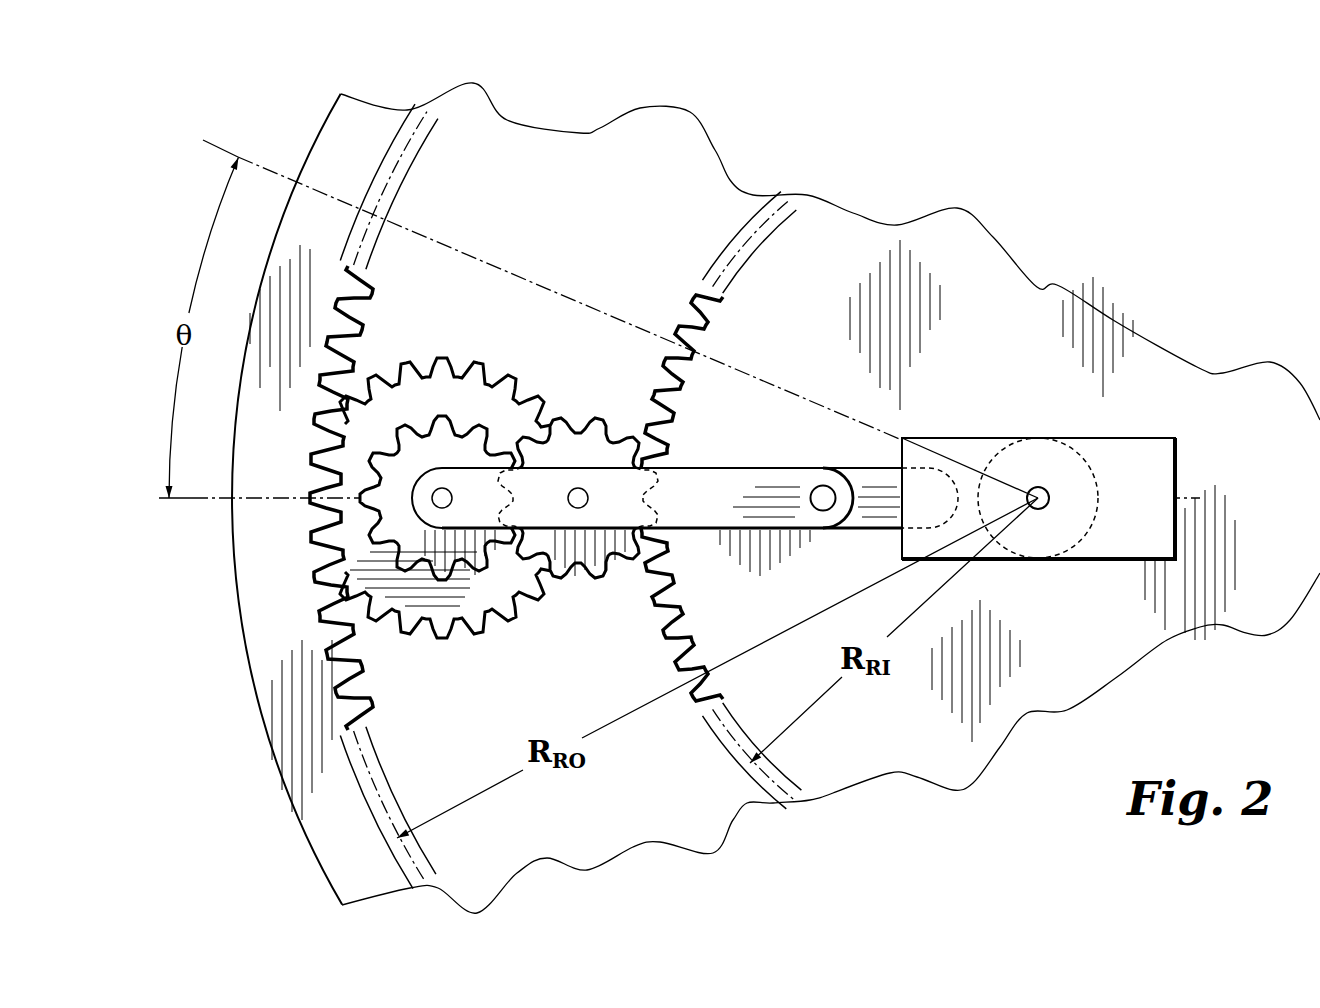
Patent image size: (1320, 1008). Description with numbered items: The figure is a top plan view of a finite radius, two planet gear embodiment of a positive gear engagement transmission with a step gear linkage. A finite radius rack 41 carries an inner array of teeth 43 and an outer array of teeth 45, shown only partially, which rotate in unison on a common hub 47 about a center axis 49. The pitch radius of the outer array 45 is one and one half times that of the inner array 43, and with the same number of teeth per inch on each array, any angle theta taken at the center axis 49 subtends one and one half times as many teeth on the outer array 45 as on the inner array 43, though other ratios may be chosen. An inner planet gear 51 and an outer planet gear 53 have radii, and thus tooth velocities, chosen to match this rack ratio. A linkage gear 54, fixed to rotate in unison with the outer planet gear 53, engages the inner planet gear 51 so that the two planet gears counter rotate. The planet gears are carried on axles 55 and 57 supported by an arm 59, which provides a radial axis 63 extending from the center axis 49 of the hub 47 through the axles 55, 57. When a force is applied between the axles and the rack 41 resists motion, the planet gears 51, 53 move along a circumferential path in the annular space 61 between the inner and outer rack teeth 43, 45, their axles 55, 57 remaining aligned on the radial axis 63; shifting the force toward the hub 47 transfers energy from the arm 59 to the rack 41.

The finite radius rack 41 is at (753, 265).
The inner array of teeth 43 is at (657, 610).
The outer array of teeth 45 is at (343, 310).
The hub 47 is at (1088, 530).
The center axis 49 is at (1042, 492).
The inner planet gear 51 is at (572, 453).
The outer planet gear 53 is at (437, 397).
The linkage gear 54 is at (400, 475).
The inner planet gear axle 55 is at (588, 498).
The outer planet gear axle 57 is at (433, 503).
The support structure or arm 59 is at (757, 480).
The annular space 61 is at (667, 803).
The radial axis 63 is at (192, 500).